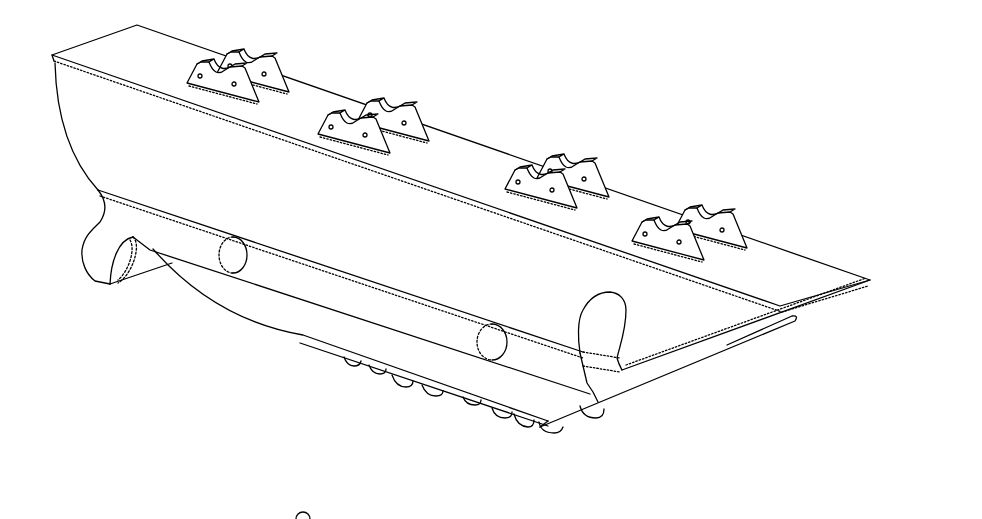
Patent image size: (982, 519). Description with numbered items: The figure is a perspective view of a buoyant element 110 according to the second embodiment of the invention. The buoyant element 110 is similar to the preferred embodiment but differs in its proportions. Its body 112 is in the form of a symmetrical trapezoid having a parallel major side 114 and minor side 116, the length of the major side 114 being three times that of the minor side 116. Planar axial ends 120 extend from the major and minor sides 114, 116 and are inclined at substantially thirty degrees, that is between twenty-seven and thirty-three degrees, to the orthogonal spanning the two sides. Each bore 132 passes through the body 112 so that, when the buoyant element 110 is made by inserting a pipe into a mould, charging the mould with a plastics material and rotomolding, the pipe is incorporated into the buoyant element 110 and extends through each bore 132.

The buoyant element 110 is at (760, 95).
The body 112 is at (293, 297).
The major side 114 is at (463, 167).
The minor side 116 is at (363, 360).
The planar axial ends 120 is at (76, 152).
The bore 132 is at (225, 242).